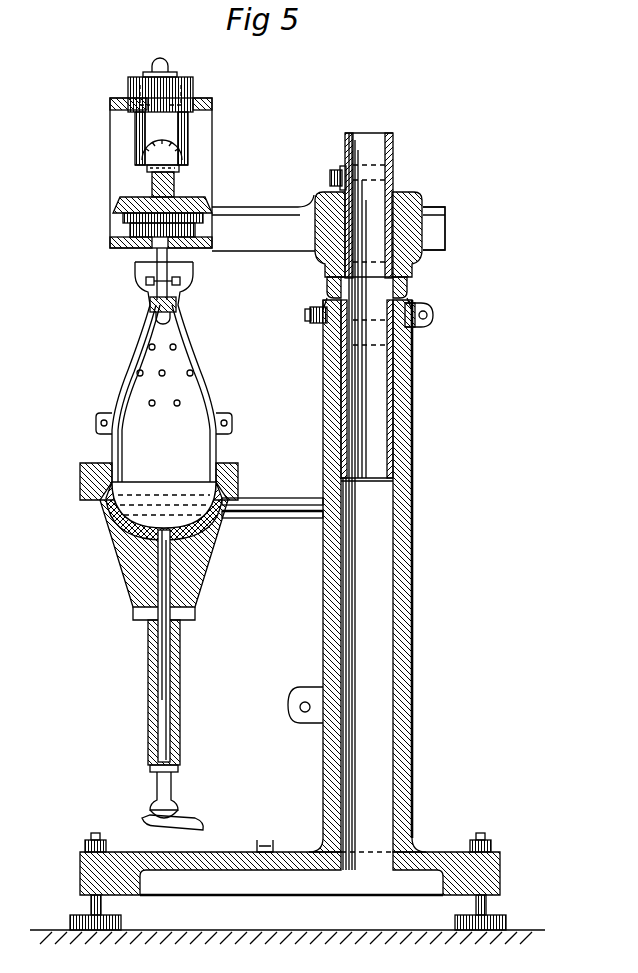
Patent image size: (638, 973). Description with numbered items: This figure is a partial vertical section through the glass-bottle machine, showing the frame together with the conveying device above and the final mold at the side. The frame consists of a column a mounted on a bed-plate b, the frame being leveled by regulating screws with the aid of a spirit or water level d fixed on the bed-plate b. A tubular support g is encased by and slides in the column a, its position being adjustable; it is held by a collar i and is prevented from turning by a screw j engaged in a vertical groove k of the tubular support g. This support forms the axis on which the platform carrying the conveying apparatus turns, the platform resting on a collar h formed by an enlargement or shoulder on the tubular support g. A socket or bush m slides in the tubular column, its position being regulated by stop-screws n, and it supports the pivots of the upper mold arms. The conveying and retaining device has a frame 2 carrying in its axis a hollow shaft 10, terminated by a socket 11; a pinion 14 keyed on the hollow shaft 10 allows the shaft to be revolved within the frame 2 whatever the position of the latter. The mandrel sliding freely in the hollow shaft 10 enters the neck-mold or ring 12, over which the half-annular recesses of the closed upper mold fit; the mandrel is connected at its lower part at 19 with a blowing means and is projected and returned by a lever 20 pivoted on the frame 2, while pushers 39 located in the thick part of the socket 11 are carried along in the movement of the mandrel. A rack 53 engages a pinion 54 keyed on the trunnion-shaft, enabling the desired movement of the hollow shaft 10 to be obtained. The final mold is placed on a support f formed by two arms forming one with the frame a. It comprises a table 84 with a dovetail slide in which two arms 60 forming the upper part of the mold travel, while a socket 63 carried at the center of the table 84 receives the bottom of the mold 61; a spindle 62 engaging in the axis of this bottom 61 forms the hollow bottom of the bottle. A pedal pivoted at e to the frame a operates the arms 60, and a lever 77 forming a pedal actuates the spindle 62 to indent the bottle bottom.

The frame 2 is at (110, 103).
The socket 11 is at (130, 84).
The ring 12 is at (152, 70).
The rack 53 is at (136, 137).
The pinion 54 is at (180, 142).
The hollow shaft 10 is at (150, 188).
The pushers 39 is at (170, 185).
The pinion 14 is at (198, 206).
The socket or bush m is at (392, 148).
The stop-screws n is at (330, 178).
The collar h is at (327, 290).
The screw j is at (312, 318).
The collar i is at (418, 308).
The vertical groove k is at (346, 390).
The tubular support g is at (404, 392).
The column a is at (412, 628).
The pivot e is at (300, 722).
The lever 20 is at (180, 281).
The connection to blowing means 19 is at (172, 316).
The arms 60 is at (202, 358).
The table 84 is at (80, 486).
The bottom of the mold 61 is at (122, 528).
The socket 63 is at (196, 556).
The support f is at (272, 516).
The spindle 62 is at (178, 714).
The lever 77 is at (198, 821).
The bed-plate b is at (240, 853).
The spirit or water level d is at (268, 845).